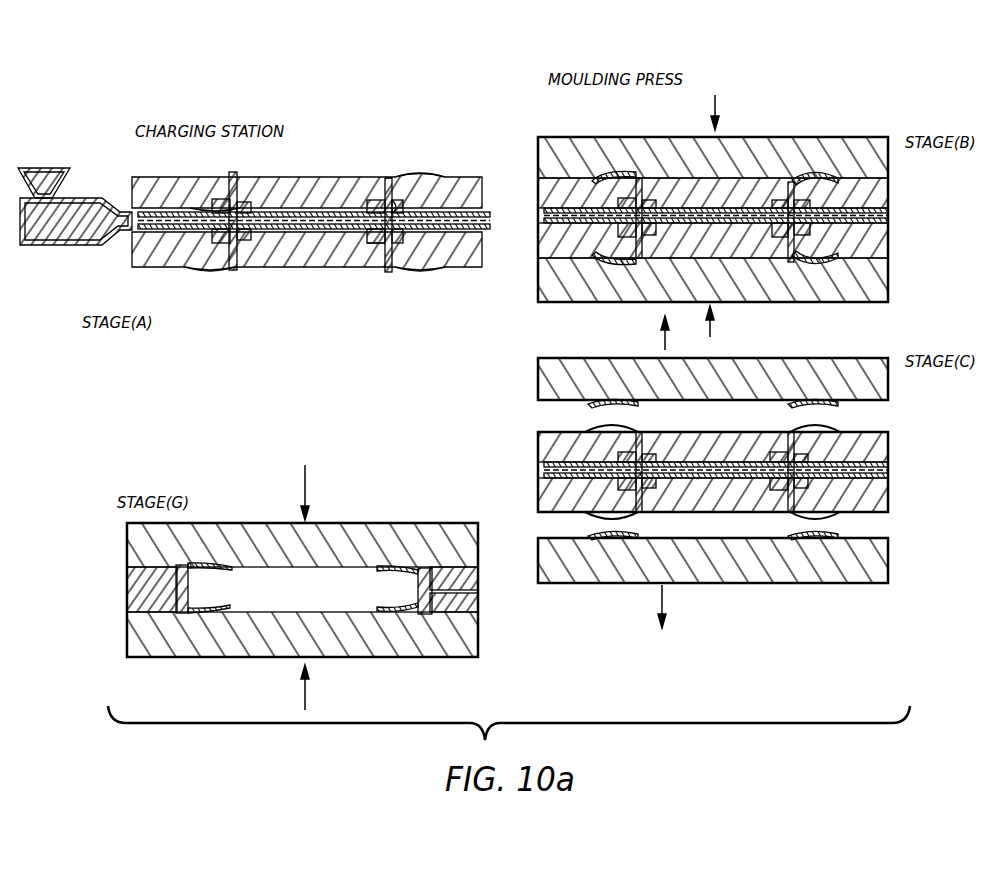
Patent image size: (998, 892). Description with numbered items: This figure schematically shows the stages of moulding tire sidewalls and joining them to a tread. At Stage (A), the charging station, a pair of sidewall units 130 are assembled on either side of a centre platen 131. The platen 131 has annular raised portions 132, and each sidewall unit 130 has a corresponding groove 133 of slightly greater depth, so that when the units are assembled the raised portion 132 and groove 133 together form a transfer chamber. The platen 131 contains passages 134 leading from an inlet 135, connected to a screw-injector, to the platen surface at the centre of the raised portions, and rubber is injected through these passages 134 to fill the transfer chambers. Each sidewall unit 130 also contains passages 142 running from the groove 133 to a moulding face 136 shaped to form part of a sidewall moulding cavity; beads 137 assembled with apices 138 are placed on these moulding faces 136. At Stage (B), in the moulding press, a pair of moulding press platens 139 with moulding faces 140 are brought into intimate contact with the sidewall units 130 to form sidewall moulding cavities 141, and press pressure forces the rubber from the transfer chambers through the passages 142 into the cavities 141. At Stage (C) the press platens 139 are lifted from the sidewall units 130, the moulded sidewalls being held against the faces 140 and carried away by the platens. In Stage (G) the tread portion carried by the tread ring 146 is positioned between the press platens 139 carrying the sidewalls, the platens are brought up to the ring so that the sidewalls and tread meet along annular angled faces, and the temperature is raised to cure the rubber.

The sidewall unit 130 is at (465, 255).
The centre platen 131 is at (482, 220).
The annular raised portion 132 is at (233, 270).
The groove 133 is at (370, 262).
The passage 134 is at (420, 178).
The inlet 135 is at (132, 212).
The moulding face 136 is at (212, 206).
The bead 137 is at (388, 180).
The apex 138 is at (395, 205).
The moulding press platen 139 is at (572, 150).
The moulding face 140 is at (600, 178).
The sidewall moulding cavity 141 is at (818, 178).
The passage 142 is at (232, 200).
The tread ring 146 is at (478, 575).